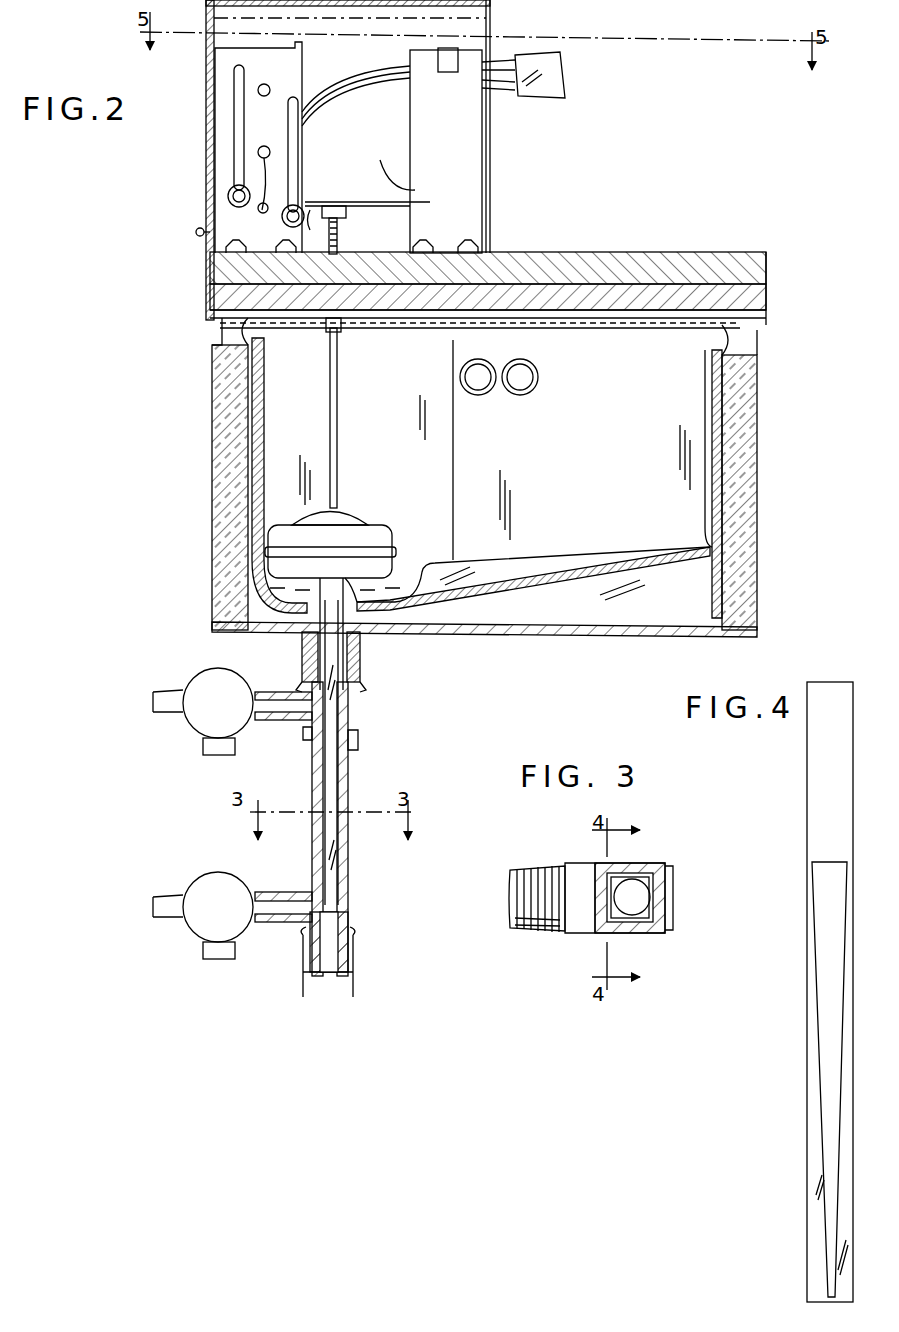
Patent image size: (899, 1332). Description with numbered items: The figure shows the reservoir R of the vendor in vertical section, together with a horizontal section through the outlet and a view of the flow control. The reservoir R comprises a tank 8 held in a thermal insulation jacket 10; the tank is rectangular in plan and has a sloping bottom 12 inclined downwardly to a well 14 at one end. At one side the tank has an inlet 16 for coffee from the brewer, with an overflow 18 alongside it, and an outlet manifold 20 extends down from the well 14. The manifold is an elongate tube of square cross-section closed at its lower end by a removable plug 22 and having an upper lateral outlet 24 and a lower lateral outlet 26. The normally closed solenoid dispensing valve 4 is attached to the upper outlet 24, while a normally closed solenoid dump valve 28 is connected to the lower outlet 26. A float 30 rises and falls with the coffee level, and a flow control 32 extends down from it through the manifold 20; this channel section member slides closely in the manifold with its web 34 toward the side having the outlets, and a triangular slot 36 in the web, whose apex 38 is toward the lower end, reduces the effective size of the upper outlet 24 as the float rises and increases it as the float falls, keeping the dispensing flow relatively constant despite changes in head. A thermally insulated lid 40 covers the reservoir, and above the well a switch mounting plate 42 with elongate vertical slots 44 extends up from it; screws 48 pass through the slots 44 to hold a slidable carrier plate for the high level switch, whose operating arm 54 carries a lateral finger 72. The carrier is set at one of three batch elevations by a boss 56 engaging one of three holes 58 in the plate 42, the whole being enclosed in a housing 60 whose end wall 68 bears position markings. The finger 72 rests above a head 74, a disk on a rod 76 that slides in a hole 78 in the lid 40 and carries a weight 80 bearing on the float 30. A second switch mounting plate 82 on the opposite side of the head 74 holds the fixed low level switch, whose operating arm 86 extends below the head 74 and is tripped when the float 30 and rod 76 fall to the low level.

In FIG. 2, the dispensing valve 4 is at (200, 672).
In FIG. 2, the tank 8 is at (256, 453).
In FIG. 2, the thermal insulation jacket 10 is at (240, 520).
In FIG. 2, the sloping bottom 12 is at (560, 567).
In FIG. 2, the well 14 is at (378, 612).
In FIG. 2, the inlet 16 is at (535, 392).
In FIG. 2, the overflow 18 is at (462, 383).
In FIG. 2, the outlet manifold 20 is at (350, 727).
In FIG. 2, the removable plug 22 is at (330, 980).
In FIG. 2, the upper lateral outlet 24 is at (270, 720).
In FIG. 2, the lower lateral outlet 26 is at (285, 925).
In FIG. 2, the dump valve 28 is at (202, 876).
In FIG. 2, the float 30 is at (395, 545).
In FIG. 2, the flow control 32 is at (338, 786).
In FIG. 3, the flow control 32 is at (630, 865).
In FIG. 4, the flow control 32 is at (808, 772).
In FIG. 2, the web 34 is at (322, 645).
In FIG. 3, the web 34 is at (603, 920).
In FIG. 4, the web 34 is at (822, 840).
In FIG. 2, the triangular slot 36 is at (323, 880).
In FIG. 3, the triangular slot 36 is at (614, 897).
In FIG. 4, the triangular slot 36 is at (830, 985).
In FIG. 4, the apex 38 is at (830, 1298).
In FIG. 2, the lid 40 is at (766, 256).
In FIG. 2, the switch mounting plate 42 is at (303, 50).
In FIG. 2, the vertical slots 44 is at (236, 130).
In FIG. 2, the screws 48 is at (228, 198).
In FIG. 2, the operating arm 54 is at (317, 227).
In FIG. 2, the boss 56 is at (262, 213).
In FIG. 2, the holes 58 is at (262, 86).
In FIG. 2, the housing 60 is at (492, 36).
In FIG. 2, the end wall 68 is at (207, 158).
In FIG. 2, the lateral finger 72 is at (340, 202).
In FIG. 2, the head 74 is at (348, 212).
In FIG. 2, the rod 76 is at (338, 412).
In FIG. 2, the hole 78 is at (341, 322).
In FIG. 2, the weight 80 is at (395, 492).
In FIG. 2, the second switch mounting plate 82 is at (433, 150).
In FIG. 2, the operating arm 86 is at (415, 190).
In FIG. 2, the reservoir R is at (212, 408).